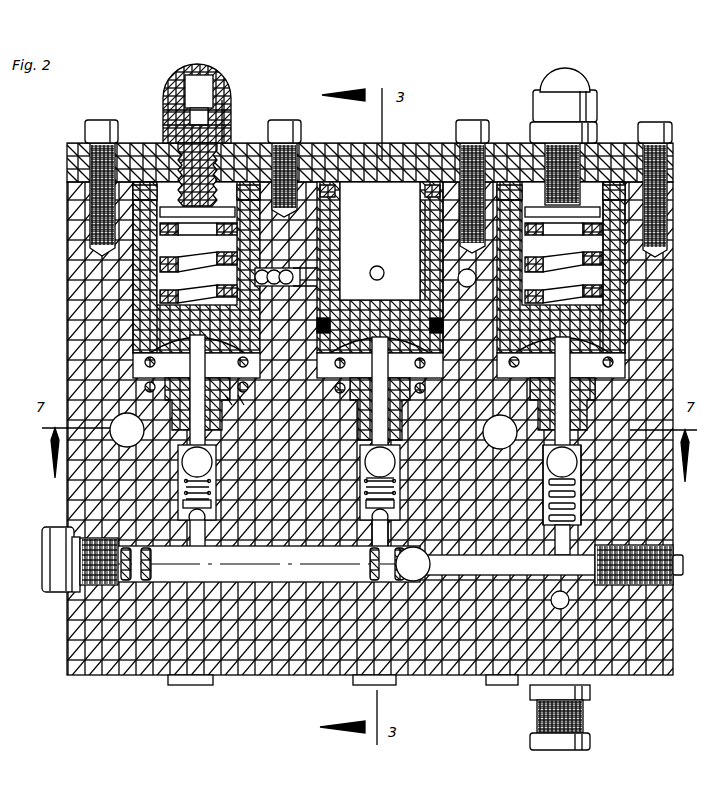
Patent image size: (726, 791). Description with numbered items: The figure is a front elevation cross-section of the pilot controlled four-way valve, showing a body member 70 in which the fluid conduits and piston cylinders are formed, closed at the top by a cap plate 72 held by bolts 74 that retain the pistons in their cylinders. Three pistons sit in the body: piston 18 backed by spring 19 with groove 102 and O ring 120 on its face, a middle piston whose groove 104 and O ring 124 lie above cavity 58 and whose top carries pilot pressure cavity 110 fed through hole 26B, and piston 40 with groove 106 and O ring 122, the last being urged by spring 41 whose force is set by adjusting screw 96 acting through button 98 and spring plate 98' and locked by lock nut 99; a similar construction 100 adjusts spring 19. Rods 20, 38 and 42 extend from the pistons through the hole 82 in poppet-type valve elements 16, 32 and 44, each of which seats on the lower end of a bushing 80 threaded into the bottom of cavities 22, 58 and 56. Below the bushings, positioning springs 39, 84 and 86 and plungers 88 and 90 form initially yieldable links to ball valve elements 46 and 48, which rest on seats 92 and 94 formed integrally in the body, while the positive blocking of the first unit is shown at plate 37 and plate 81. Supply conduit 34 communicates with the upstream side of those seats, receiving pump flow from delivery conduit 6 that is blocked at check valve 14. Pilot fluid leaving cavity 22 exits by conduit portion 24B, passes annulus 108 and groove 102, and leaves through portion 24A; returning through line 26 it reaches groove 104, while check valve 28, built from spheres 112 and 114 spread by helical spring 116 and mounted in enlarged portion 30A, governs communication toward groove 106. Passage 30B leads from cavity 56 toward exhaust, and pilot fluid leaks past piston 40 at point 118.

The delivery conduit 6 is at (488, 572).
The check valve 14 is at (410, 584).
The high pressure control poppet-type valve 16 is at (542, 472).
The piston 18 is at (620, 285).
The spring 19 is at (625, 262).
The pin 20 is at (542, 450).
The cylinder cavity 22 is at (442, 380).
The portion of conduit 24 24A is at (420, 268).
The portion of conduit 24 24B is at (494, 424).
The line 26 is at (326, 270).
The hole 26B is at (374, 280).
The check valve 28 is at (272, 288).
The enlarged portion 30A is at (262, 262).
The passage 30B is at (236, 386).
The valve element 32 is at (360, 462).
The supply conduit 34 is at (270, 586).
The piston plate 37 is at (345, 350).
The valve actuating rod 38 is at (396, 418).
The positioning spring 39 is at (400, 480).
The piston 40 is at (140, 278).
The spring 41 is at (136, 252).
The valve actuating rod 42 is at (205, 366).
The valve element 44 is at (212, 455).
The ball valve element 46 is at (175, 540).
The ball valve element 48 is at (400, 514).
The cavity 56 is at (160, 400).
The cavity 58 is at (442, 360).
The body member 70 is at (60, 207).
The cap plate 72 is at (70, 150).
The bolts 74 is at (104, 120).
The bushing 80 is at (398, 440).
The piston plate 81 is at (186, 368).
The hole 82 is at (400, 458).
The positioning spring 84 is at (548, 494).
The positioning spring 86 is at (216, 476).
The plunger 88 is at (400, 500).
The plunger 90 is at (214, 496).
The valve seat 92 is at (212, 514).
The valve seat 94 is at (362, 525).
The adjusting screw 96 is at (232, 100).
The button 98 is at (197, 121).
The spring plate 98' is at (210, 166).
The lock nut 99 is at (166, 128).
The adjusting construction 100 is at (592, 84).
The groove 102 is at (630, 322).
The groove 104 is at (467, 287).
The groove 106 is at (150, 310).
The annulus 108 is at (640, 330).
The pilot pressure cavity 110 is at (380, 241).
The sphere 112 is at (300, 318).
The sphere 114 is at (262, 286).
The helical spring 116 is at (292, 288).
The leakage point 118 is at (142, 382).
The O ring 120 is at (620, 212).
The O ring 122 is at (140, 192).
The O ring 124 is at (444, 326).